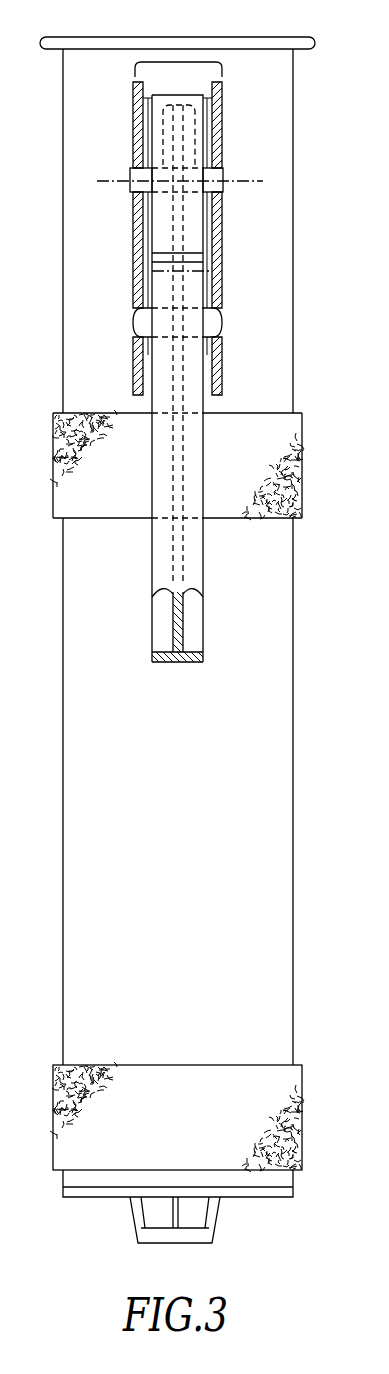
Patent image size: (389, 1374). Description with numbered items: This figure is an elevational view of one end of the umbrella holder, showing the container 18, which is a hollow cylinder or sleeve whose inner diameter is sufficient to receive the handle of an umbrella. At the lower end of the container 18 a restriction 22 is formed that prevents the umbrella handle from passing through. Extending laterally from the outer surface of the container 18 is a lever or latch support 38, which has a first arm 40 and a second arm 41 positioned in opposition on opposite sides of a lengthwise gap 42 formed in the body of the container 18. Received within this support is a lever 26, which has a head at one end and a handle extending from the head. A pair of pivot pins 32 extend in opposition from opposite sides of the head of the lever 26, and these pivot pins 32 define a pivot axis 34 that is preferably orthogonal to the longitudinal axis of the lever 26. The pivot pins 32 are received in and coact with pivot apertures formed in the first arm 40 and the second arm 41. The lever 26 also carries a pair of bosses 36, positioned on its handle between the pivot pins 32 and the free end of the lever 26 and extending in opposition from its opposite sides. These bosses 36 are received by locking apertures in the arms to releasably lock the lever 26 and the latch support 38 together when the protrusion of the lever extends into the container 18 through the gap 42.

The container 18 is at (293, 892).
The restriction 22 is at (93, 1200).
The lever 26 is at (226, 596).
The pivot pins 32 is at (130, 196).
The pivot axis 34 is at (248, 180).
The bosses 36 is at (136, 322).
The latch support 38 is at (178, 62).
The first arm 40 is at (137, 123).
The second arm 41 is at (217, 117).
The gap 42 is at (210, 271).